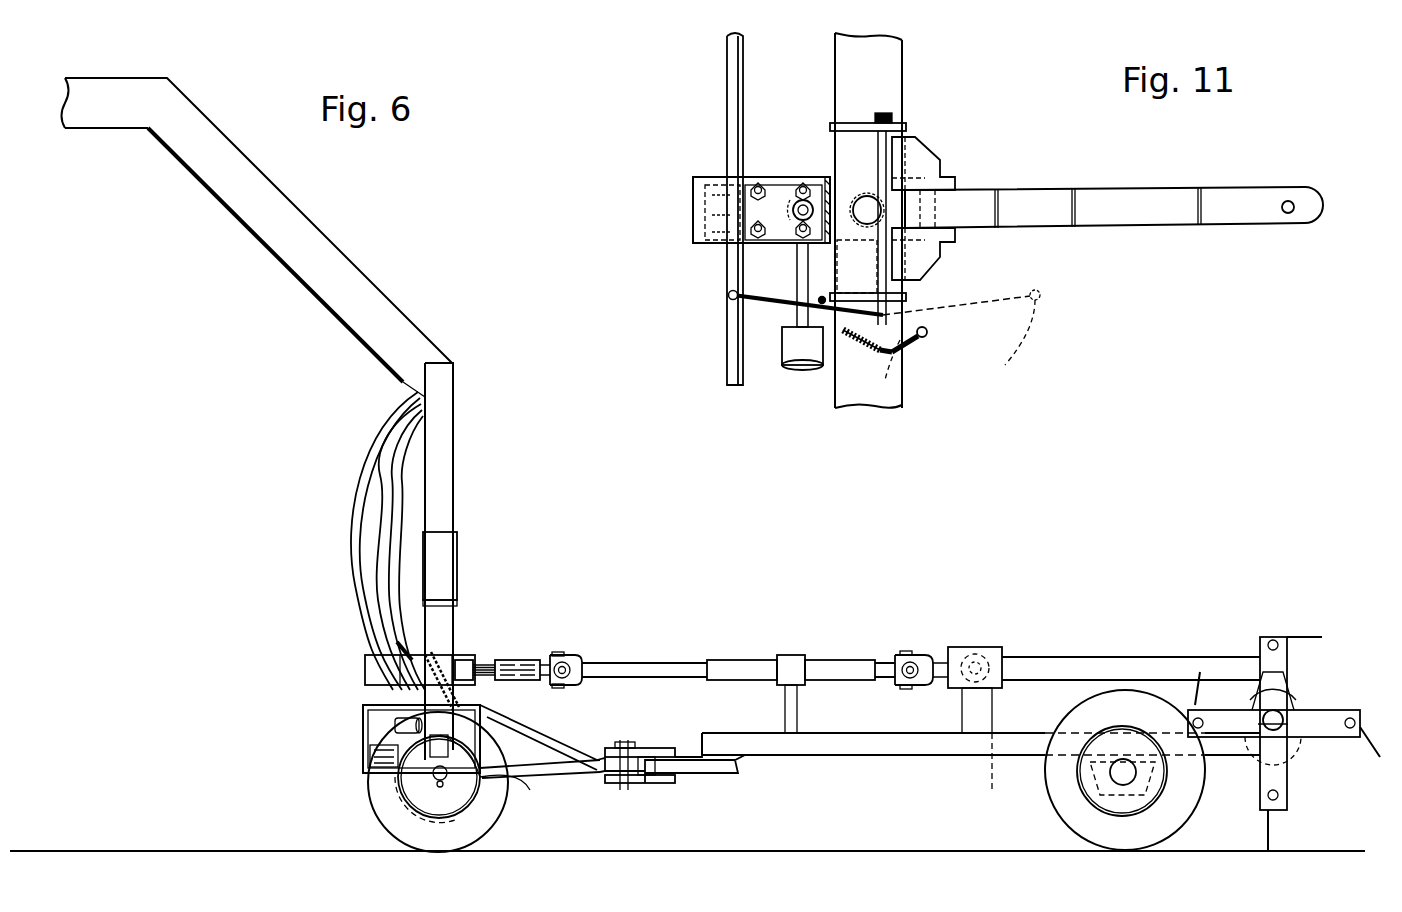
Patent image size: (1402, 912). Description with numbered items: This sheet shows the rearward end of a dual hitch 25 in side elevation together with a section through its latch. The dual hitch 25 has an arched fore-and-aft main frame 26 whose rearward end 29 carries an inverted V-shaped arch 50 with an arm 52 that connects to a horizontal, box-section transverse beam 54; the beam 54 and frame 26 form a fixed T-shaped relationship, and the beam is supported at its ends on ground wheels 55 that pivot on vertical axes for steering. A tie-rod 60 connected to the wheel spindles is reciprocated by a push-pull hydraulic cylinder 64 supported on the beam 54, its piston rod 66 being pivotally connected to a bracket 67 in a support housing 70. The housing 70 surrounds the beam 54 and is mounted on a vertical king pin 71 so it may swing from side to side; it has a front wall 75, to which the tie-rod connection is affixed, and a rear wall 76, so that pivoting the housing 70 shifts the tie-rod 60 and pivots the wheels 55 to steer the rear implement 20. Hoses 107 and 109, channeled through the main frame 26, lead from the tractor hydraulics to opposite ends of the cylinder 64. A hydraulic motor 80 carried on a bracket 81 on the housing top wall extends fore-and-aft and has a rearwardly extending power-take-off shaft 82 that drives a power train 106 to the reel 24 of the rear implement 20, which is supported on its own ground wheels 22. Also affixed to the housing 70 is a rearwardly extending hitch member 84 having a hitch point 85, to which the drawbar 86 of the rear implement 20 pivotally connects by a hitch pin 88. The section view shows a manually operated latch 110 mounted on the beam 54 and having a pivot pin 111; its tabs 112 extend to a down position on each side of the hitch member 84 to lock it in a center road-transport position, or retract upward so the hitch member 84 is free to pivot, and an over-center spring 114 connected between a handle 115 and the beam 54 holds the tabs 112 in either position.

In FIG. 6, the rear implement 20 is at (1102, 618).
In FIG. 6, the ground wheels 22 is at (1060, 795).
In FIG. 6, the reel 24 is at (1318, 712).
In FIG. 6, the dual hitch 25 is at (145, 232).
In FIG. 6, the arched main frame 26 is at (135, 78).
In FIG. 6, the rearward end 29 is at (283, 233).
In FIG. 6, the inverted V-shaped arch 50 is at (513, 542).
In FIG. 6, the arm 52 is at (447, 620).
In FIG. 6, the transverse beam 54 is at (480, 705).
In FIG. 11, the transverse beam 54 is at (903, 68).
In FIG. 6, the ground wheels 55 is at (385, 815).
In FIG. 6, the tie-rod 60 is at (375, 760).
In FIG. 11, the tie-rod 60 is at (727, 118).
In FIG. 6, the push-pull hydraulic cylinder 64 is at (395, 727).
In FIG. 11, the push-pull hydraulic cylinder 64 is at (800, 352).
In FIG. 11, the piston rod 66 is at (797, 267).
In FIG. 11, the bracket 67 is at (778, 178).
In FIG. 6, the support housing 70 is at (348, 703).
In FIG. 11, the support housing 70 is at (670, 190).
In FIG. 6, the king pin 71 is at (420, 815).
In FIG. 11, the king pin 71 is at (860, 196).
In FIG. 6, the front wall 75 is at (363, 716).
In FIG. 11, the front wall 75 is at (693, 228).
In FIG. 6, the rear wall 76 is at (500, 745).
In FIG. 6, the hydraulic motor 80 is at (365, 675).
In FIG. 11, the bracket 81 is at (842, 246).
In FIG. 6, the power-take-off shaft 82 is at (490, 660).
In FIG. 6, the hitch member 84 is at (555, 735).
In FIG. 11, the hitch member 84 is at (1040, 197).
In FIG. 11, the hitch point 85 is at (1288, 200).
In FIG. 6, the drawbar 86 is at (745, 768).
In FIG. 6, the hitch pin 88 is at (625, 745).
In FIG. 6, the power train 106 is at (650, 660).
In FIG. 6, the hose 107 is at (375, 537).
In FIG. 6, the second hose 109 is at (362, 500).
In FIG. 11, the manually operated latch 110 is at (955, 114).
In FIG. 11, the pivot pin 111 is at (885, 113).
In FIG. 11, the tabs 112 is at (925, 258).
In FIG. 11, the over-center spring 114 is at (905, 360).
In FIG. 11, the handle 115 is at (760, 300).